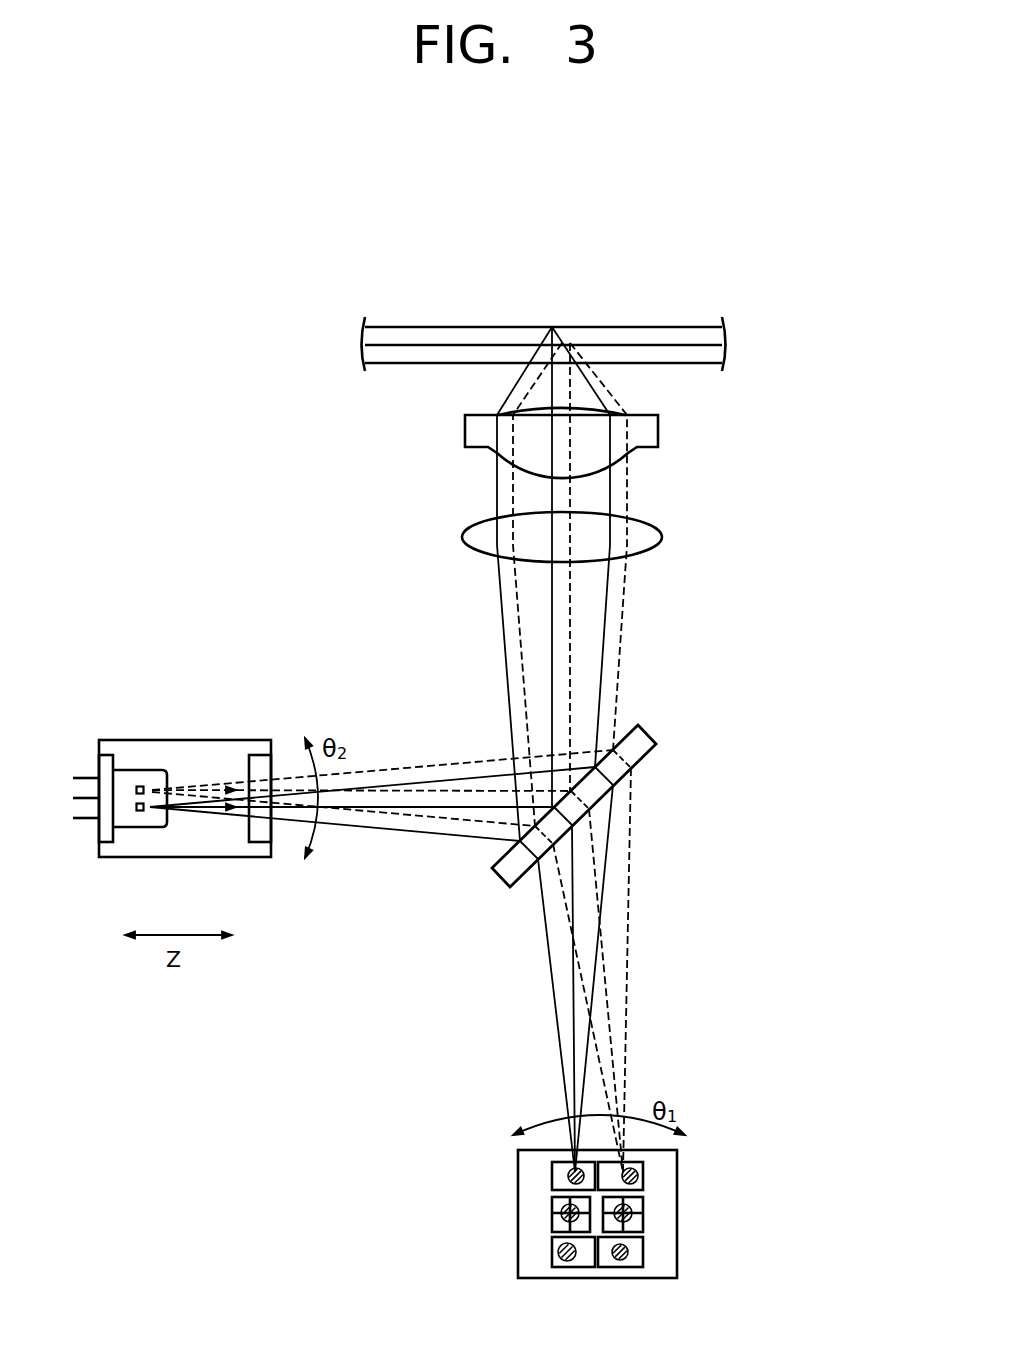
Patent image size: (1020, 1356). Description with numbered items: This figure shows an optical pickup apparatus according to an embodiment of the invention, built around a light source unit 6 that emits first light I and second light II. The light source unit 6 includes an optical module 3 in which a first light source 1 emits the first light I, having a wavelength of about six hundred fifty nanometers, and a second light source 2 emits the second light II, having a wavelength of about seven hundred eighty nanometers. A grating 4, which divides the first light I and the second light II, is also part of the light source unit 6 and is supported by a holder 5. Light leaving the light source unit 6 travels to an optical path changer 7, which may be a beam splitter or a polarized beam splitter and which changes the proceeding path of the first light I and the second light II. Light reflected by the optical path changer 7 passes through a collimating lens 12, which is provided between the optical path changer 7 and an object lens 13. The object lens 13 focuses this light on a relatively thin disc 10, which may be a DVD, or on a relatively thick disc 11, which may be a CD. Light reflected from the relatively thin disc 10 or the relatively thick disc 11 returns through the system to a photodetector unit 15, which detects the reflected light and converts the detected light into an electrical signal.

The first light source 1 is at (143, 786).
The second light source 2 is at (140, 811).
The optical module 3 is at (127, 770).
The grating 4 is at (265, 757).
The holder 5 is at (210, 740).
The light source unit 6 is at (166, 730).
The optical path changer 7 is at (652, 730).
The relatively thin disc 10 is at (722, 353).
The relatively thick disc 11 is at (722, 334).
The collimating lens 12 is at (663, 538).
The object lens 13 is at (660, 432).
The photodetector unit 15 is at (513, 1192).